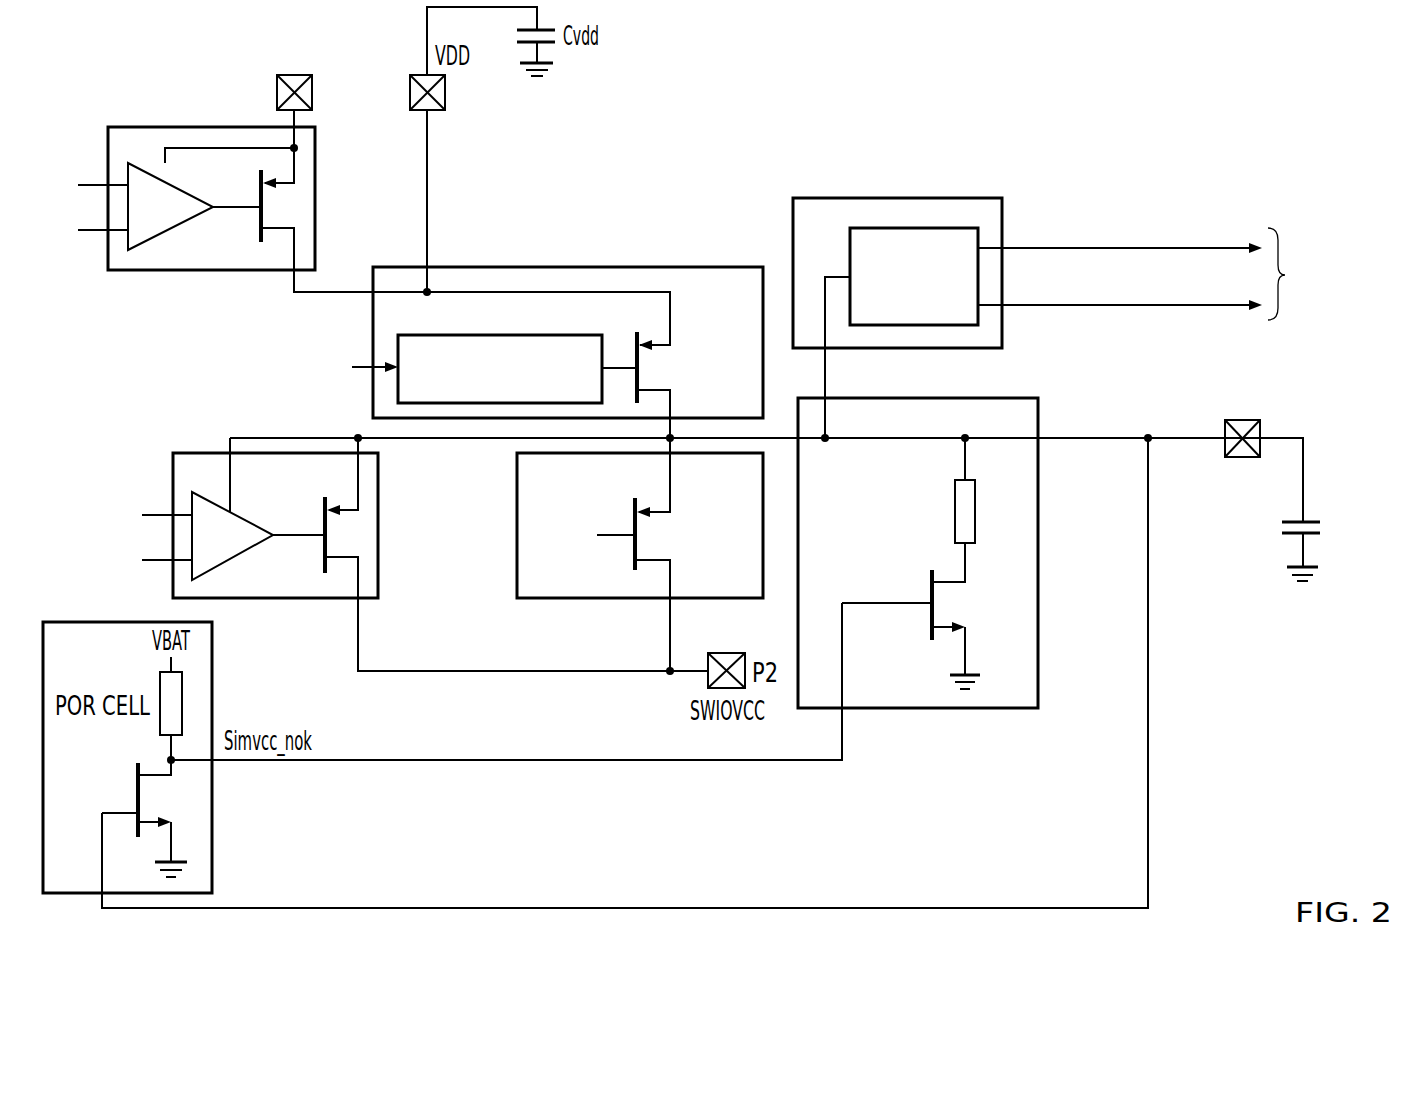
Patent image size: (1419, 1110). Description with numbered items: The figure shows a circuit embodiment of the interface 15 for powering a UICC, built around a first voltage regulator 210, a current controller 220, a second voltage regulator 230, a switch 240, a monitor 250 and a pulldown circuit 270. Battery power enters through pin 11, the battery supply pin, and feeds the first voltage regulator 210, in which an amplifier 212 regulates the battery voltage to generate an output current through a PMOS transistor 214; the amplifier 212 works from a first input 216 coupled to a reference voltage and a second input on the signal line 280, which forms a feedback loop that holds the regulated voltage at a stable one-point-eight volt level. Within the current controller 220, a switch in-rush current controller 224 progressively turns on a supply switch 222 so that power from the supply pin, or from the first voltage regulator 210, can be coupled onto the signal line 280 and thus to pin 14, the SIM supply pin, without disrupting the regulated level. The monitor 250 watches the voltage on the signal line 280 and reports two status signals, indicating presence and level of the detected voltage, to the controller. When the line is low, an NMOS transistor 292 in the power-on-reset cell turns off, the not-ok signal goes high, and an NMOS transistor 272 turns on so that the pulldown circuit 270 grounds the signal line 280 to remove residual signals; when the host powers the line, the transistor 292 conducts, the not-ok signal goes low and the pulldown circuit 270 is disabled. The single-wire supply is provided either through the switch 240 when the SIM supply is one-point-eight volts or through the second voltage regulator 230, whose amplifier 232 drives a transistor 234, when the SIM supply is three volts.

The pin 11 is at (279, 78).
The pin 14 is at (1223, 447).
The interface 15 is at (965, 51).
The first voltage regulator 210 is at (142, 272).
The amplifier 212 is at (172, 217).
The PMOS transistor 214 is at (284, 184).
The first input 216 is at (92, 232).
The current controller 220 is at (580, 266).
The VDD switch 222 is at (665, 389).
The switch in-rush current controller 224 is at (554, 334).
The second voltage regulator 230 is at (173, 473).
The amplifier 232 is at (235, 550).
The transistor 234 is at (370, 556).
The switch 240 is at (632, 565).
The monitor 250 is at (815, 197).
The pulldown circuit 270 is at (993, 710).
The NMOS transistor 272 is at (930, 628).
The signal line 280 is at (1090, 437).
The NMOS transistor 292 is at (138, 792).